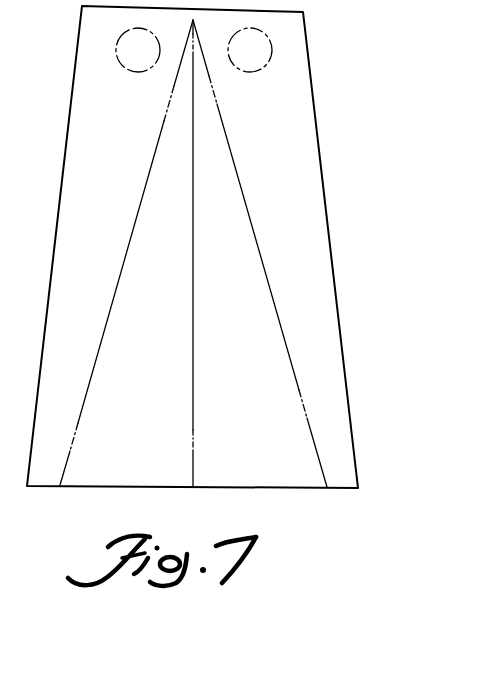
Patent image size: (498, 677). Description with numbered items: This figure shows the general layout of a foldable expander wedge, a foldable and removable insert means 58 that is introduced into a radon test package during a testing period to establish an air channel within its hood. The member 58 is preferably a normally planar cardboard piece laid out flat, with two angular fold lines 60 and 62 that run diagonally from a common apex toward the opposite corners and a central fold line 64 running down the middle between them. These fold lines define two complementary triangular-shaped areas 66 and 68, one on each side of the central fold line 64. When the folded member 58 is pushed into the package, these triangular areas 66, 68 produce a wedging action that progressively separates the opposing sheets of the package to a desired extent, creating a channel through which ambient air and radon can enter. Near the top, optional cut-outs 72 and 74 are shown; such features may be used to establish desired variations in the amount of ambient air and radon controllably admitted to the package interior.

The foldable and removable insert means 58 is at (362, 423).
The angular fold line 60 is at (107, 330).
The angular fold line 62 is at (288, 357).
The central fold line 64 is at (190, 272).
The triangular-shaped area 66 is at (140, 442).
The triangular-shaped area 68 is at (259, 442).
The cut-out 72 is at (143, 73).
The cut-out 74 is at (233, 72).